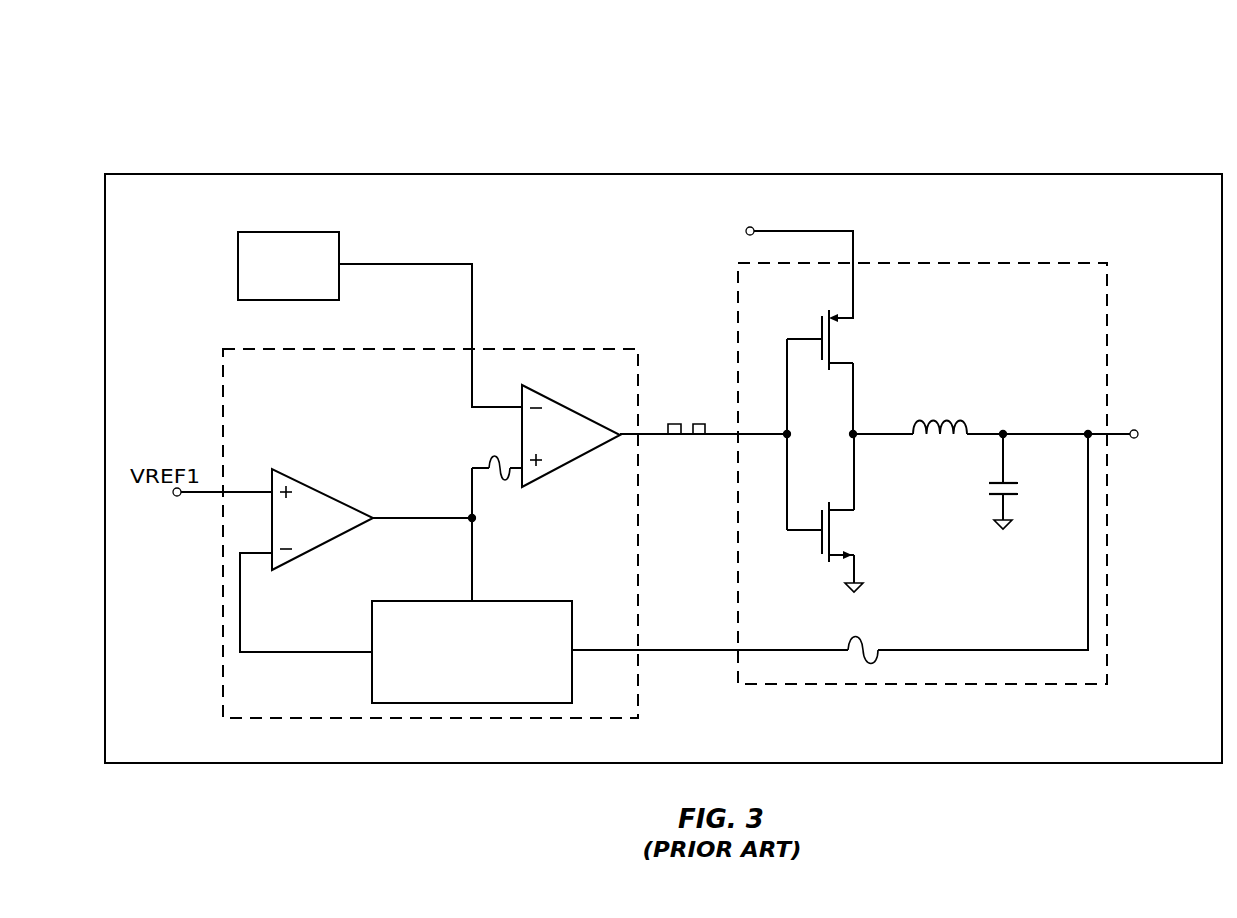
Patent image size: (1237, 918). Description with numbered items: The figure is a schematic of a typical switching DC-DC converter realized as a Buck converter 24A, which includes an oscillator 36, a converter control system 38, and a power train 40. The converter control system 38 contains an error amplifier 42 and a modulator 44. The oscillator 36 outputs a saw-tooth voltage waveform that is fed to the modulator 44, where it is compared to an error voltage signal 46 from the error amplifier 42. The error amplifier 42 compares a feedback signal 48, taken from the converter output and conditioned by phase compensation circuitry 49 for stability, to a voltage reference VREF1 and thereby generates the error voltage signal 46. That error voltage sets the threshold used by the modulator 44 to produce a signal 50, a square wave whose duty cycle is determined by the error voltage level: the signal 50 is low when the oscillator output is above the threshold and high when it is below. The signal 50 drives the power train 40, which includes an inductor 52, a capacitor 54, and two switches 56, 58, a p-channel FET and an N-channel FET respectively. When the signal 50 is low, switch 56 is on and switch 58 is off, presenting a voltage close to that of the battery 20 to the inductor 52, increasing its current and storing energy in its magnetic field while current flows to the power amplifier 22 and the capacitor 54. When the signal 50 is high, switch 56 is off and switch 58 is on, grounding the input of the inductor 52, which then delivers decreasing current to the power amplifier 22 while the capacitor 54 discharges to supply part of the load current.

The Buck converter 24A is at (1024, 90).
The oscillator 36 is at (302, 287).
The converter control system 38 is at (551, 349).
The power train 40 is at (1013, 262).
The error amplifier 42 is at (322, 494).
The modulator 44 is at (574, 412).
The error voltage signal 46 is at (491, 462).
The feedback signal 48 is at (859, 645).
The phase compensation circuitry 49 is at (488, 680).
The signal 50 is at (677, 424).
The inductor 52 is at (953, 424).
The capacitor 54 is at (1015, 484).
The switch 56 is at (862, 338).
The switch 58 is at (866, 526).
The battery 20 is at (749, 256).
The power amplifier 22 is at (1145, 428).